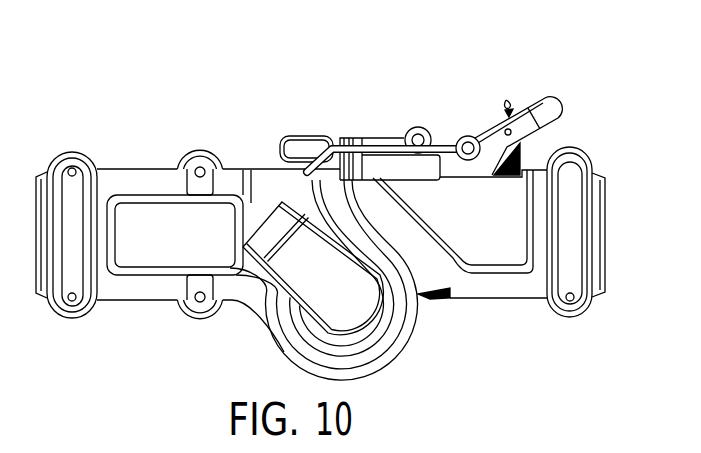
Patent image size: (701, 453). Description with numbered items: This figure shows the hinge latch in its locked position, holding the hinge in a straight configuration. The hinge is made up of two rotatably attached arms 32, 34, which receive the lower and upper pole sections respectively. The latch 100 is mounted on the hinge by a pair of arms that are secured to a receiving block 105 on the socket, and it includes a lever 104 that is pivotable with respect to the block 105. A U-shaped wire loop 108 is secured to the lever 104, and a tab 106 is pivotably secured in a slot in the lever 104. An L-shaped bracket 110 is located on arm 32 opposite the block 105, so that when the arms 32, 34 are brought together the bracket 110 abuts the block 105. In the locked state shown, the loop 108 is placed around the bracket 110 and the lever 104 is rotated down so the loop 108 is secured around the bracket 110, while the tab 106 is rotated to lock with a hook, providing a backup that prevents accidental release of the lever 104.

The arm 32 is at (152, 248).
The arm 34 is at (490, 250).
The latch 100 is at (405, 91).
The lever 104 is at (547, 110).
The receiving block 105 is at (372, 136).
The tab 106 is at (507, 103).
The U-shaped wire loop 108 is at (444, 148).
The L-shaped bracket 110 is at (290, 150).